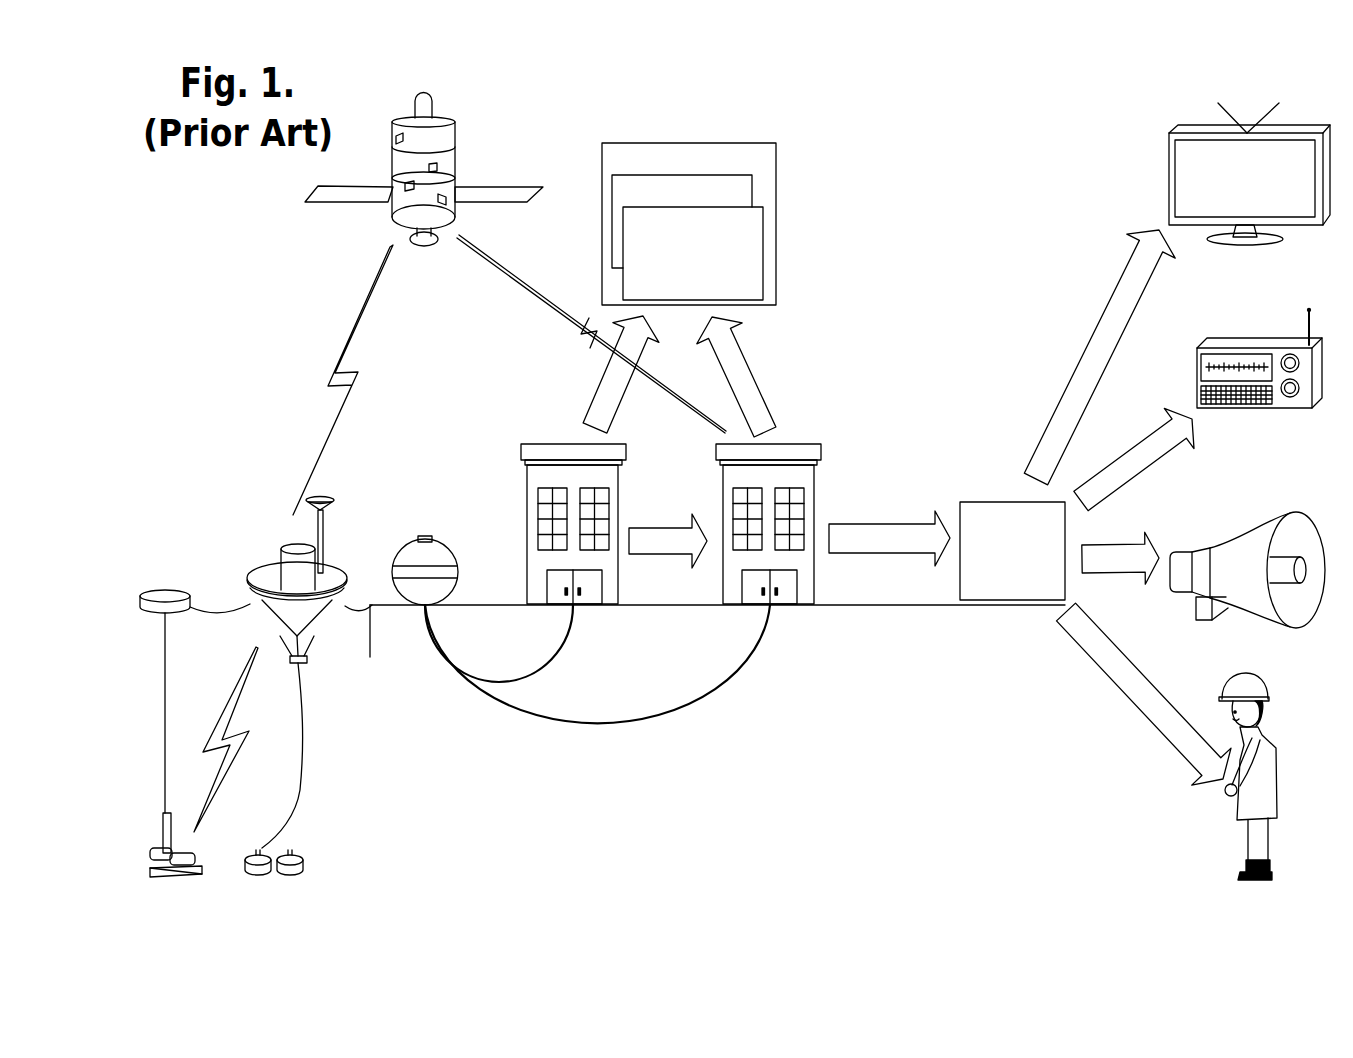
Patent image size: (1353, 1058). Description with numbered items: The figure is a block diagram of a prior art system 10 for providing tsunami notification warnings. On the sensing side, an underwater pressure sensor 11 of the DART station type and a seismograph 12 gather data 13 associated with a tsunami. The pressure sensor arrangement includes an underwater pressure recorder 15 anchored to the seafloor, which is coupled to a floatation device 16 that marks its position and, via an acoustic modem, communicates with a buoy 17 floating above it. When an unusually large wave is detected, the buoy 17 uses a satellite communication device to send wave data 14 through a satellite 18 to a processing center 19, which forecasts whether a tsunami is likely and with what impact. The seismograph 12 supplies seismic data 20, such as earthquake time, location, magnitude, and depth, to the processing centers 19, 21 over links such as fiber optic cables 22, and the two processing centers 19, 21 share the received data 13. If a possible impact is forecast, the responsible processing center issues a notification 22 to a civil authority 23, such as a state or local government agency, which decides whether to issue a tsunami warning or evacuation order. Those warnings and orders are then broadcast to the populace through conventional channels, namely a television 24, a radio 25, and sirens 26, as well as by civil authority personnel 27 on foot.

The prior art system 10 is at (226, 183).
The underwater pressure sensor 11 is at (334, 462).
The seismograph 12 is at (450, 548).
The data 13 is at (776, 146).
The wave data 14 is at (763, 224).
The underwater pressure recorder 15 is at (249, 845).
The floatation device 16 is at (168, 590).
The buoy 17 is at (256, 565).
The satellite 18 is at (455, 125).
The processing center 19 is at (627, 448).
The seismic data 20 is at (752, 192).
The processing center 21 is at (822, 448).
The notification 22 is at (893, 522).
The civil authority 23 is at (965, 500).
The television 24 is at (1169, 144).
The radio 25 is at (1237, 338).
The siren 26 is at (1210, 552).
The civil authority personnel 27 is at (1225, 790).